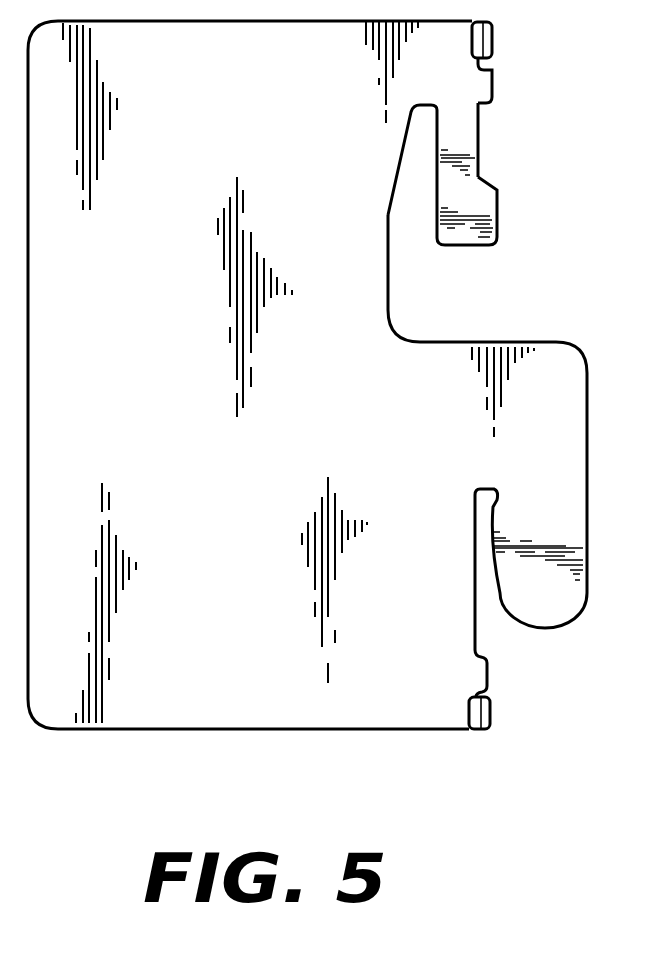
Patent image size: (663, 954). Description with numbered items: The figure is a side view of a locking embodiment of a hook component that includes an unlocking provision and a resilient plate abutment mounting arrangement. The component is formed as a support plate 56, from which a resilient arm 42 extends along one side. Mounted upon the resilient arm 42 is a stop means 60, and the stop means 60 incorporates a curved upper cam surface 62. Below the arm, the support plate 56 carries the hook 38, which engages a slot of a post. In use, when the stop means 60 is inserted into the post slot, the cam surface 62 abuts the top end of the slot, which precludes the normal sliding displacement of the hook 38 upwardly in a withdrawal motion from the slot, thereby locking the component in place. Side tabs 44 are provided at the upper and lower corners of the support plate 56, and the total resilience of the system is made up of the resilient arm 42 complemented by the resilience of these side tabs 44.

The support plate 56 is at (298, 735).
The side tabs 44 is at (492, 47).
The resilient arm 42 is at (472, 152).
The curved upper cam surface 62 is at (480, 180).
The stop means 60 is at (489, 246).
The hook 38 is at (552, 602).